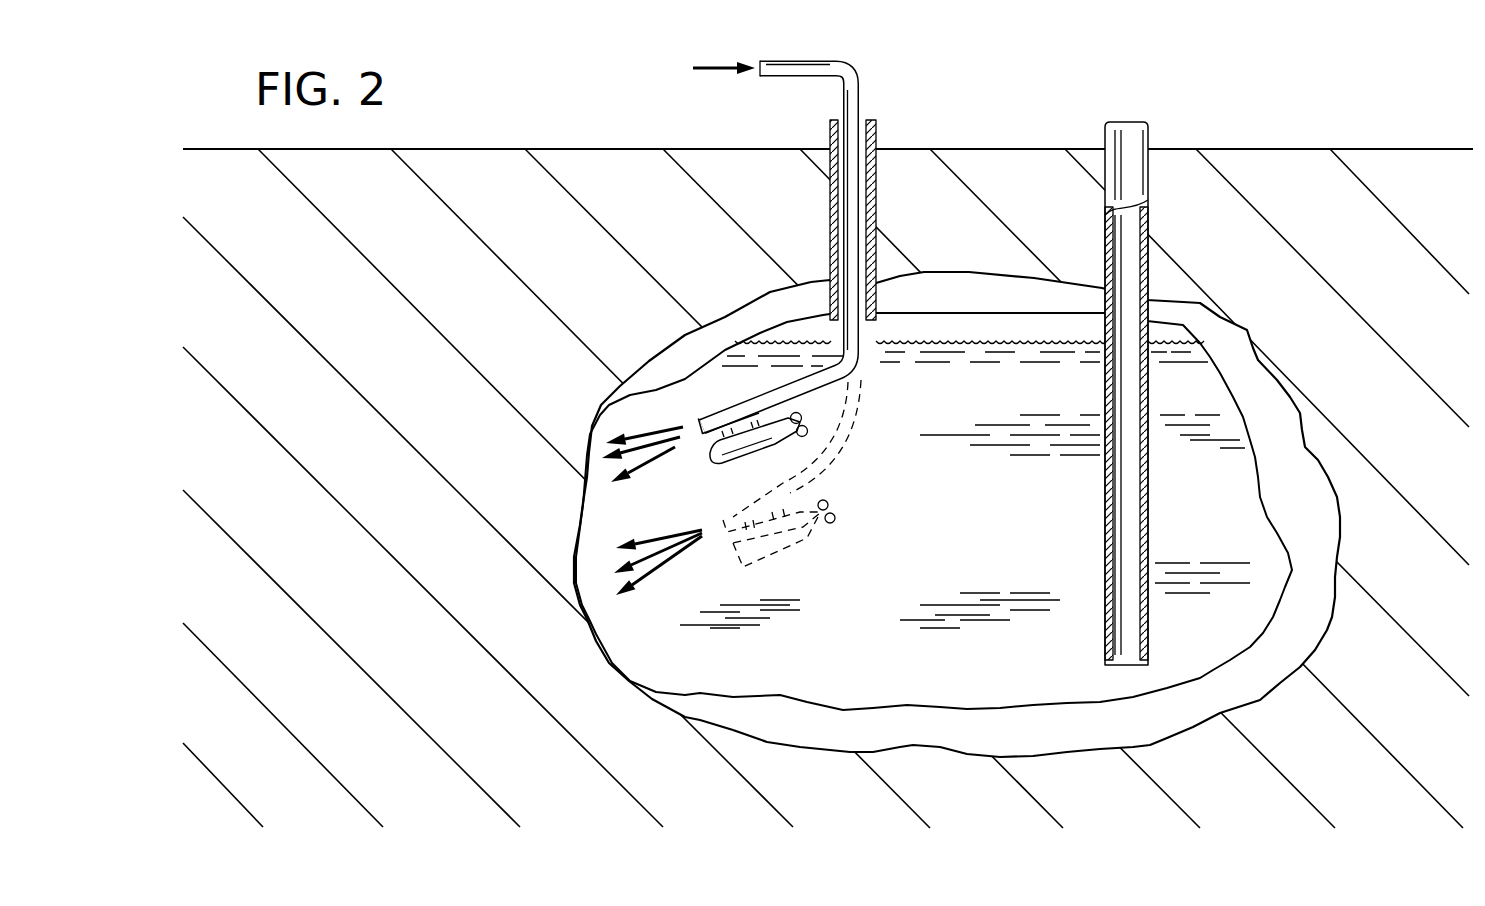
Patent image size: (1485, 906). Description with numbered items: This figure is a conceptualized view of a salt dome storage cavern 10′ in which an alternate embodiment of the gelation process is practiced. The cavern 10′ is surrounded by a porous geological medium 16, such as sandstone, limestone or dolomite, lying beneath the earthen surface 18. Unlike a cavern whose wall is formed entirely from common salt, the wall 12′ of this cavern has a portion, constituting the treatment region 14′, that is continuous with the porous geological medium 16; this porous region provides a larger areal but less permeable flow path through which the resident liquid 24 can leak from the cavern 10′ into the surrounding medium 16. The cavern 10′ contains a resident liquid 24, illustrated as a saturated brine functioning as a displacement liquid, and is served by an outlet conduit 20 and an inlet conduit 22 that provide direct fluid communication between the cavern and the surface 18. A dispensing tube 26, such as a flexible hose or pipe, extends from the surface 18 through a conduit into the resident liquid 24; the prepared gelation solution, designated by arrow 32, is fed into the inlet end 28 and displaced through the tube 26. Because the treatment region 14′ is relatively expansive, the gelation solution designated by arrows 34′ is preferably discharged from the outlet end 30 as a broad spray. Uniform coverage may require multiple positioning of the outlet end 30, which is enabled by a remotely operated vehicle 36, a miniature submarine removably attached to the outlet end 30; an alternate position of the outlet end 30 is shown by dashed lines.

The salt dome storage cavern 10′ is at (933, 698).
The wall 12′ is at (810, 700).
The treatment region 14′ is at (593, 620).
The geological medium 16 is at (1100, 807).
The earthen surface 18 is at (585, 148).
The outlet conduit 20 is at (878, 133).
The inlet conduit 22 is at (1149, 139).
The resident liquid 24 is at (1010, 504).
The dispensing tube 26 is at (864, 374).
The inlet end 28 is at (770, 60).
The outlet end 30 is at (701, 418).
The arrow 32 is at (707, 41).
The arrows 34′ is at (632, 466).
The remotely operated vehicle (ROV) 36 is at (750, 460).